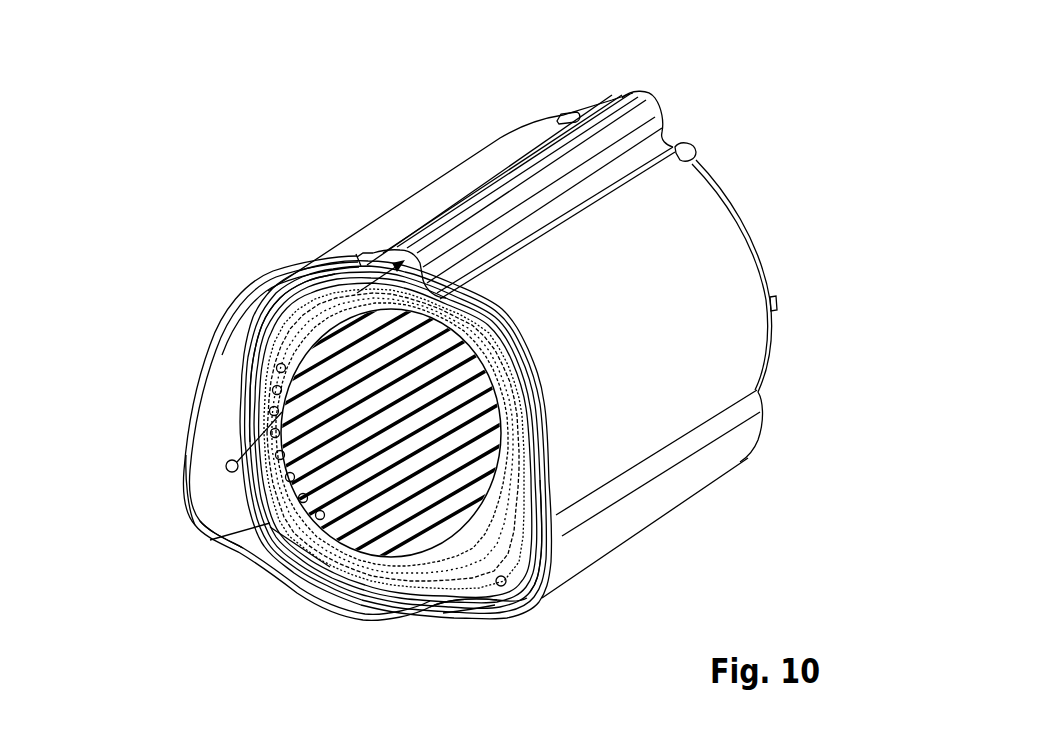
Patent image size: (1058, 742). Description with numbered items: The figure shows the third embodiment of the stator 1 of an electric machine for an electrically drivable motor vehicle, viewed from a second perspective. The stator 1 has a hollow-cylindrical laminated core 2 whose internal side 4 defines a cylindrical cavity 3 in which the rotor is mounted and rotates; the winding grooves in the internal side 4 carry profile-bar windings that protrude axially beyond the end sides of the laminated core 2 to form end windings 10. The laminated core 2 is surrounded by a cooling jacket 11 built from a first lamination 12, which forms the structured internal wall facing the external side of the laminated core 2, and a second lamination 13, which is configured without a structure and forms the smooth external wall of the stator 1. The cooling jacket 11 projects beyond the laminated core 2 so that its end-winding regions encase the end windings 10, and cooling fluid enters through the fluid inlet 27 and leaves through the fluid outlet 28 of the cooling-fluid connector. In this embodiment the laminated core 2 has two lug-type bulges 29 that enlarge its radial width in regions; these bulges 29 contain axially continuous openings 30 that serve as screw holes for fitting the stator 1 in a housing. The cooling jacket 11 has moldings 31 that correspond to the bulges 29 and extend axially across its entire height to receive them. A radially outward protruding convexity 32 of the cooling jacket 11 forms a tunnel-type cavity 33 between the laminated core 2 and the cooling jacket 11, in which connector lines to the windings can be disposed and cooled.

The stator 1 is at (762, 162).
The laminated core 2 is at (312, 288).
The cylindrical cavity 3 is at (305, 459).
The internal side 4 is at (363, 522).
The end windings 10 is at (370, 560).
The cooling jacket 11 is at (644, 528).
The first lamination 12 is at (226, 376).
The second lamination 13 is at (732, 235).
The fluid inlet 27 is at (693, 146).
The fluid outlet 28 is at (567, 114).
The lug-type bulges 29 is at (235, 488).
The axially continuous openings 30 is at (226, 462).
The moldings 31 is at (186, 507).
The convexity 32 is at (644, 94).
The tunnel-type cavity 33 is at (318, 302).